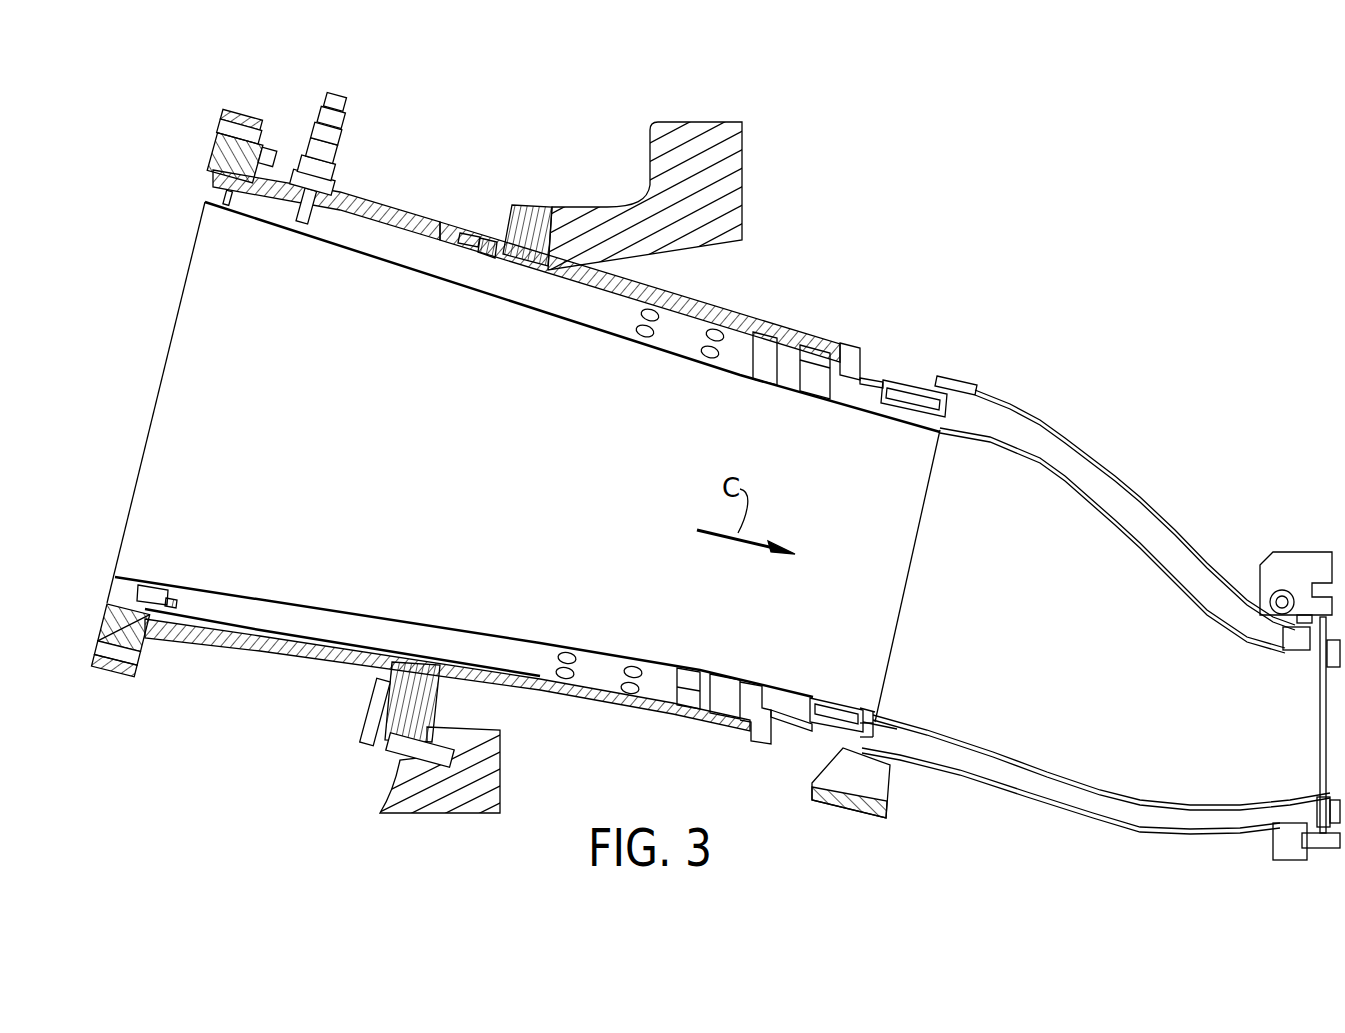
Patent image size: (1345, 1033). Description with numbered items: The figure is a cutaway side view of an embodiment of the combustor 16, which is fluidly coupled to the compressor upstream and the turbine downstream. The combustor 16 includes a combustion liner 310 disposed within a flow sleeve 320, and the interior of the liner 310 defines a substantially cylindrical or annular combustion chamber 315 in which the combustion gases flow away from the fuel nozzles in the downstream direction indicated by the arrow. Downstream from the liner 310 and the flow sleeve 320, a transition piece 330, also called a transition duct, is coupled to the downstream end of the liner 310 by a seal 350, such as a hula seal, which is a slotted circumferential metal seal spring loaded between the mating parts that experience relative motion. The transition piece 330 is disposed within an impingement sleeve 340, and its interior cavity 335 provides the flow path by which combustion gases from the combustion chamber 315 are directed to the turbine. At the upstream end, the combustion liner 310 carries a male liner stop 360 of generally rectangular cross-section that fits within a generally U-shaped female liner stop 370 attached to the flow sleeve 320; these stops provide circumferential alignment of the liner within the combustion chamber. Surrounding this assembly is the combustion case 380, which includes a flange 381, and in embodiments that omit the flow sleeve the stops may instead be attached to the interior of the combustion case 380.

The combustor 16 is at (907, 183).
The combustion liner 310 is at (466, 287).
The combustion chamber 315 is at (527, 505).
The flow sleeve 320 is at (722, 315).
The transition piece 330 is at (1140, 543).
The interior cavity 335 is at (1134, 663).
The impingement sleeve 340 is at (1072, 438).
The seal 350 is at (908, 383).
The male liner stop 360 is at (153, 590).
The female liner stop 370 is at (182, 610).
The combustion case 380 is at (367, 200).
The flange 381 is at (242, 110).